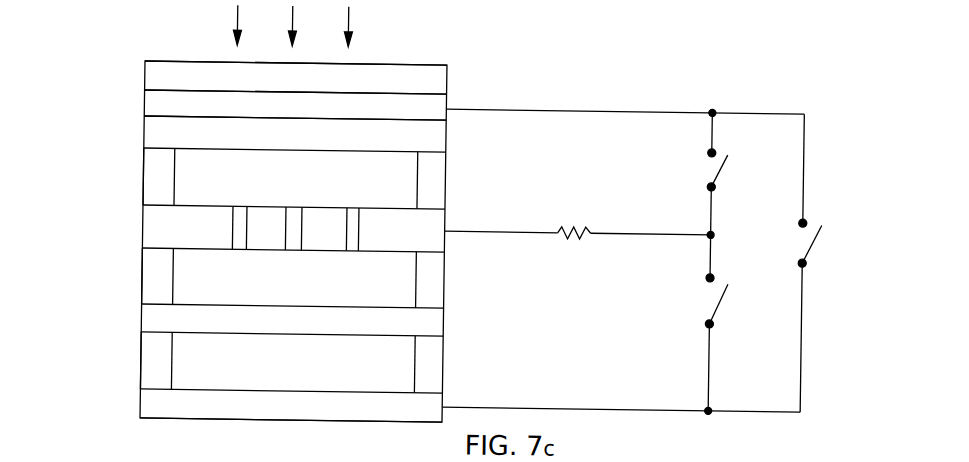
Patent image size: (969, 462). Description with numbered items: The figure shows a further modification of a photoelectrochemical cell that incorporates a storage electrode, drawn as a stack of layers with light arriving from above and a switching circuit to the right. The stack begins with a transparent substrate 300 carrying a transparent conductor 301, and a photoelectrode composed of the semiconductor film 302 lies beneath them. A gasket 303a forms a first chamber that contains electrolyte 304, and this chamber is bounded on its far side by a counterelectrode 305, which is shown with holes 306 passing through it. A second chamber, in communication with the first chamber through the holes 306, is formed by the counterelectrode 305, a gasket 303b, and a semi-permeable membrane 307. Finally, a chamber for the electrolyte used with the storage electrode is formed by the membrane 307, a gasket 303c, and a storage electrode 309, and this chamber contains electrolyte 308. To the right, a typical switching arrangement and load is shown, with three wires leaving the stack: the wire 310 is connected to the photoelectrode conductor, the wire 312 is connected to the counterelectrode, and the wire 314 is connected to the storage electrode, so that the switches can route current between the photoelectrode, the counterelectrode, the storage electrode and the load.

The transparent substrate 300 is at (145, 80).
The transparent conductor 301 is at (145, 103).
The semiconductor film 302 is at (145, 129).
The gasket 303a is at (145, 179).
The electrolyte 304 is at (202, 182).
The counterelectrode 305 is at (145, 216).
The holes 306 is at (349, 234).
The gasket 303b is at (145, 279).
The semi-permeable membrane 307 is at (145, 318).
The gasket 303c is at (145, 359).
The electrolyte 308 is at (228, 362).
The storage electrode 309 is at (143, 405).
The wire 310 is at (538, 105).
The wire 312 is at (545, 227).
The wire 314 is at (498, 401).